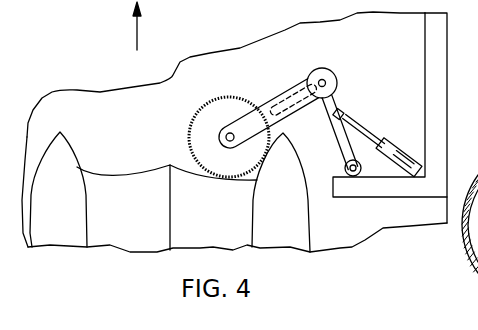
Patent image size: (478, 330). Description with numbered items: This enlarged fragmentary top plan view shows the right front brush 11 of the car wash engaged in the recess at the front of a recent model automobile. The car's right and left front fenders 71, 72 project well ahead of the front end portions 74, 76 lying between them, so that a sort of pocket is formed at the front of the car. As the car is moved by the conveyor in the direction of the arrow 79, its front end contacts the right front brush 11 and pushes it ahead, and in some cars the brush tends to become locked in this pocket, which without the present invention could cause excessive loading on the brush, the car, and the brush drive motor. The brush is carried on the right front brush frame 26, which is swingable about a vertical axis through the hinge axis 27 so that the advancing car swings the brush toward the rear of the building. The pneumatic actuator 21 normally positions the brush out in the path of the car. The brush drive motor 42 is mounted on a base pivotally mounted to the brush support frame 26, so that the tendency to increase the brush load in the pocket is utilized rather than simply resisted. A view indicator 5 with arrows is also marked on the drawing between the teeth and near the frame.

The arrow 79 is at (149, 26).
The left front fender 72 is at (55, 150).
The front end portion 76 is at (114, 175).
The front end portion 74 is at (194, 176).
The right front fender 71 is at (298, 210).
The right front brush 11 is at (227, 97).
The right front brush frame 26 is at (281, 90).
The brush drive motor 42 is at (323, 68).
The hinge axis 27 is at (353, 176).
The pneumatic actuator 21 is at (395, 143).
The section line of FIG. 5 is at (185, 192).